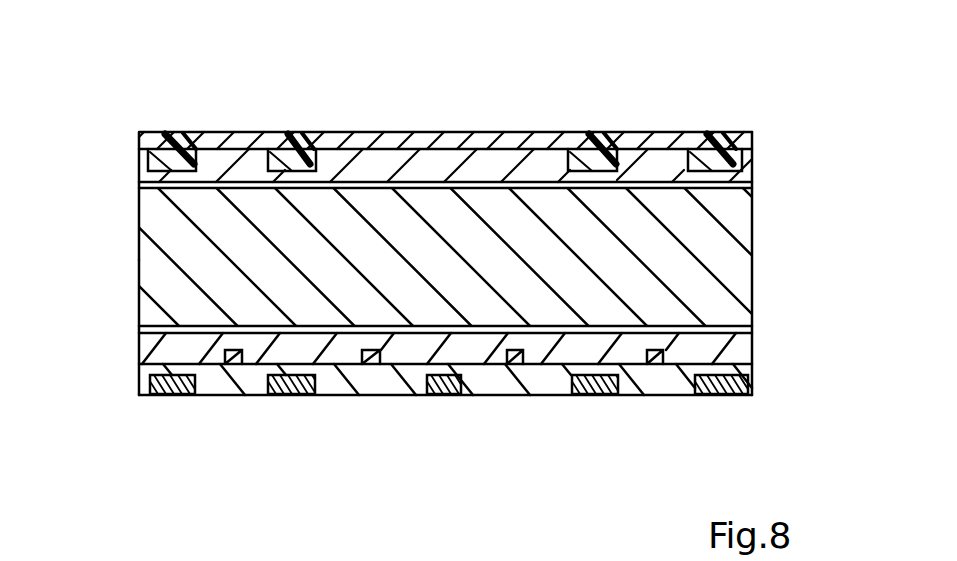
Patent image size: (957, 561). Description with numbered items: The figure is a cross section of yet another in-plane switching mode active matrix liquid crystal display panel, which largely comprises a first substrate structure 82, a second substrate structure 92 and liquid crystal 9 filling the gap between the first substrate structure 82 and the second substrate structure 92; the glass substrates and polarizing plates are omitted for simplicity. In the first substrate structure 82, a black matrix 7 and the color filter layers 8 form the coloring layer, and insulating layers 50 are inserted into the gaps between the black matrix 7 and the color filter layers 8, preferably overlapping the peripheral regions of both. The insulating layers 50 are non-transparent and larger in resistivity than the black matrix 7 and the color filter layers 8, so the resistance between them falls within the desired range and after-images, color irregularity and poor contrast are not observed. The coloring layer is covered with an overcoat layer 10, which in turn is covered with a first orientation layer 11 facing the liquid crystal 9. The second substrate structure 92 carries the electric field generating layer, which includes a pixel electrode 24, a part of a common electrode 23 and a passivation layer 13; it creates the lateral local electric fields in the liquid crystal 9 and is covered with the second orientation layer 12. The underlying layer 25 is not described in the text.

The first substrate structure 82 is at (114, 149).
The second substrate structure 92 is at (127, 350).
The black matrix 7 is at (233, 132).
The color filter layers 8 is at (148, 132).
The insulating layers 50 is at (178, 132).
The overcoat layer 10 is at (755, 163).
The first orientation layer 11 is at (755, 185).
The liquid crystal 9 is at (740, 282).
The second orientation layer 12 is at (753, 326).
The passivation layer 13 is at (753, 350).
The substrate 25 is at (753, 377).
The common electrode 23 is at (172, 397).
The pixel electrode 24 is at (234, 366).